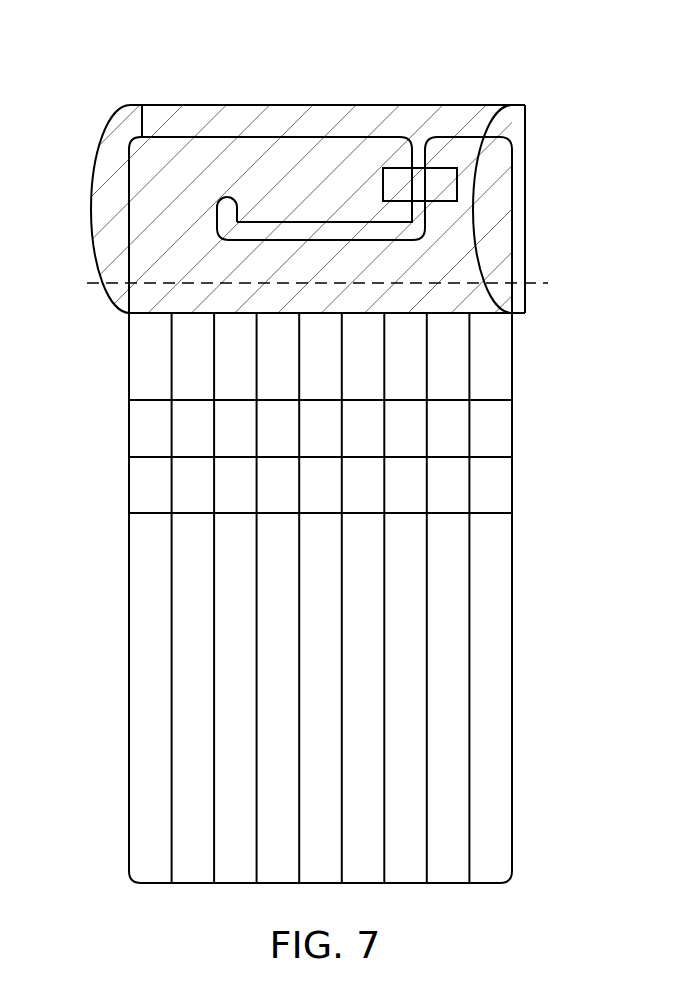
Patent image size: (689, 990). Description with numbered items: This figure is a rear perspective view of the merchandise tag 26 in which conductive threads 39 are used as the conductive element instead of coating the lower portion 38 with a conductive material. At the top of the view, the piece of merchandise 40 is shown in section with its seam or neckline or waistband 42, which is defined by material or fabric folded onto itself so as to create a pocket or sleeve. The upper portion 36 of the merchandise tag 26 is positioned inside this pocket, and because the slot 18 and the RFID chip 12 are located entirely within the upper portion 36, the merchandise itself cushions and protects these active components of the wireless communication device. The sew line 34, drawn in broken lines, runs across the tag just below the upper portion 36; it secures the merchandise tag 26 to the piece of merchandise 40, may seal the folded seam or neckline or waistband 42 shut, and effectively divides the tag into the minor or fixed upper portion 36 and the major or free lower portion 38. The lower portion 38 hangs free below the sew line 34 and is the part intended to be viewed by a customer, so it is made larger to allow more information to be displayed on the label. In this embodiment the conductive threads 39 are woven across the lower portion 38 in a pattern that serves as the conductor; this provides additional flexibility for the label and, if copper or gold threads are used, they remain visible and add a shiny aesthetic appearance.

The piece of merchandise 40 is at (122, 100).
The upper portion 36 is at (82, 135).
The lower portion 38 is at (82, 888).
The slot 18 is at (265, 222).
The RFID chip 12 is at (418, 168).
The seam or neckline or waistband 42 is at (517, 212).
The sew line 34 is at (545, 285).
The conductive threads 39 is at (455, 513).
The merchandise tag 26 is at (493, 575).